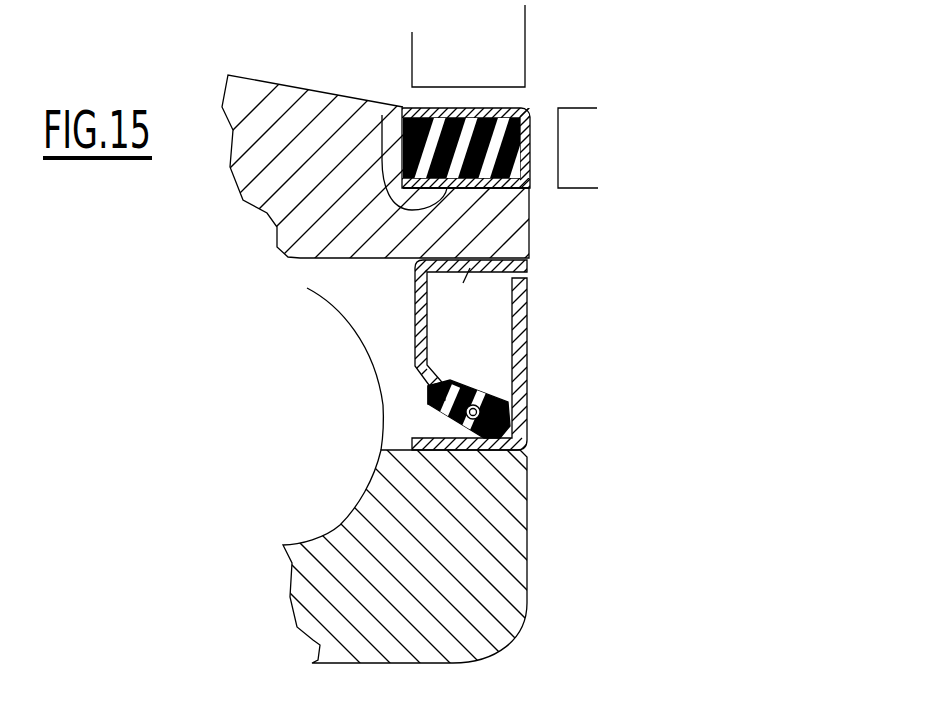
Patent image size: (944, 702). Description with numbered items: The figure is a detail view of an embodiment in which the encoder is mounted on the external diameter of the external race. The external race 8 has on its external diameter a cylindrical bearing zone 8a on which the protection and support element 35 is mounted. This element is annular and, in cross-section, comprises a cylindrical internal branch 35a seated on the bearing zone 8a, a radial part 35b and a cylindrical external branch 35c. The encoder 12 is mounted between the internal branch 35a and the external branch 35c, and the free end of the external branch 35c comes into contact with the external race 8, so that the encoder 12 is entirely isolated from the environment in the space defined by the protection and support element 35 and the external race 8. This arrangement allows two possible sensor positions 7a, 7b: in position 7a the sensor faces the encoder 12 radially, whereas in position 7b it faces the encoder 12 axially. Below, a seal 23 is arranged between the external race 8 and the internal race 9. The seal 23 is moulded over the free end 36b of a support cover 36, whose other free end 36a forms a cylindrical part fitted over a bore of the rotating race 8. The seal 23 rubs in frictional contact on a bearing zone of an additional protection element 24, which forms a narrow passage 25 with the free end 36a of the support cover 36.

The external race 8 is at (283, 123).
The cylindrical bearing zone 8a is at (382, 115).
The sensor mounting position 7a is at (507, 38).
The sensor mounting position 7b is at (575, 135).
The protection and support element 35 is at (530, 172).
The cylindrical internal branch 35a is at (465, 186).
The radial part 35b is at (523, 150).
The cylindrical external branch 35c is at (468, 112).
The encoder 12 is at (500, 188).
The narrow passage 25 is at (518, 268).
The additional protection element 24 is at (527, 343).
The seal 23 is at (513, 431).
The support cover 36 is at (415, 347).
The free end of support cover 36a is at (463, 283).
The free end of support cover 36b is at (428, 405).
The internal race 9 is at (493, 543).